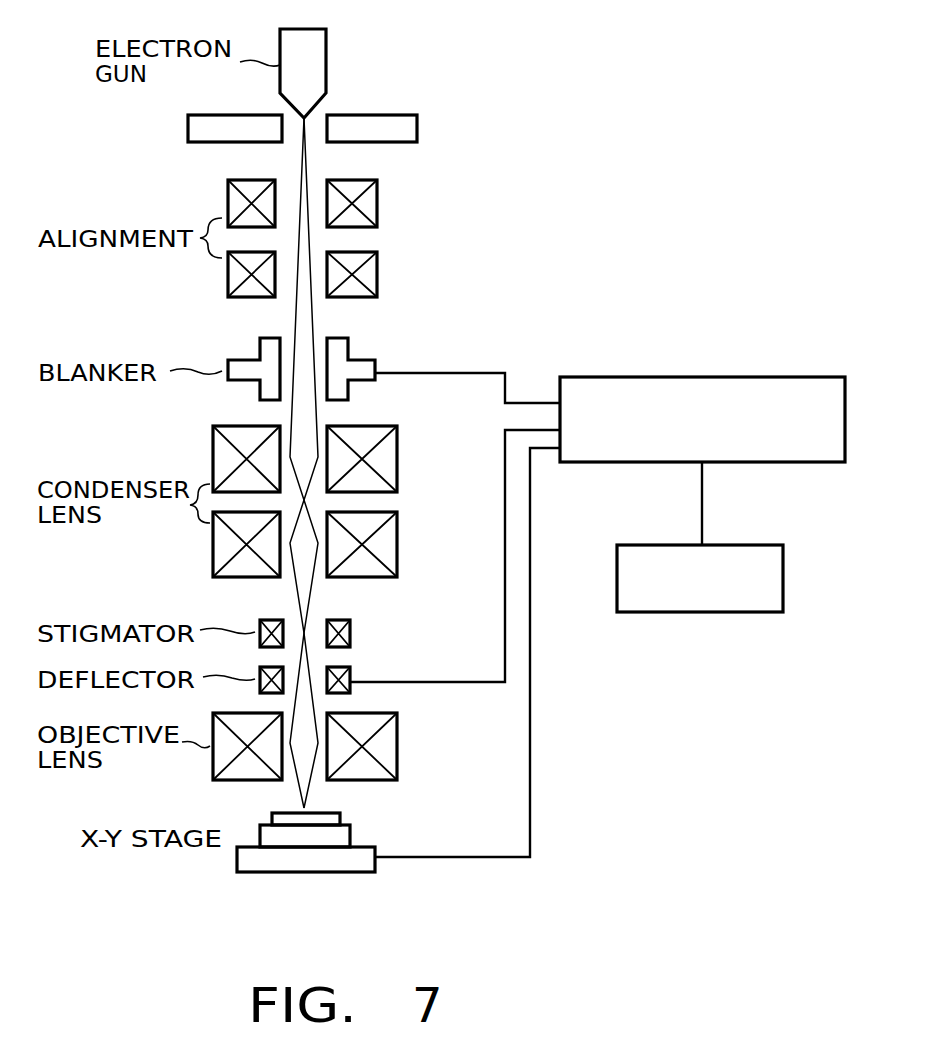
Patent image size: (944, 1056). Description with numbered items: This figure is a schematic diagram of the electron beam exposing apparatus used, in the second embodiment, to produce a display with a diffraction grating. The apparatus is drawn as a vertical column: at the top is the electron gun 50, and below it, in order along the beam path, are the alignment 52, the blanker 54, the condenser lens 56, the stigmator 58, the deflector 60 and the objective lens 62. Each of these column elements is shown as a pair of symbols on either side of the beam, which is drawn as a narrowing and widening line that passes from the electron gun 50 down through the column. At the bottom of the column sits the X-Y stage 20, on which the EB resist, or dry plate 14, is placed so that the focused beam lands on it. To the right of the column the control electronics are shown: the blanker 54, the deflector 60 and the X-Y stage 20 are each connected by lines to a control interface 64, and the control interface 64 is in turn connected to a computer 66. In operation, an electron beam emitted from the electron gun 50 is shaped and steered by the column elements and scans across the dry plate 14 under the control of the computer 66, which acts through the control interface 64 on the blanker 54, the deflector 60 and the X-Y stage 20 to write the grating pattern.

The electron gun 50 is at (326, 62).
The alignment 52 is at (377, 220).
The blanker 54 is at (367, 360).
The condenser lens 56 is at (397, 485).
The stigmator 58 is at (352, 631).
The deflector 60 is at (352, 673).
The objective lens 62 is at (397, 745).
The EB resist (dry plate) 14 is at (340, 818).
The X-Y stage 20 is at (355, 864).
The control interface 64 is at (700, 377).
The computer 66 is at (748, 545).